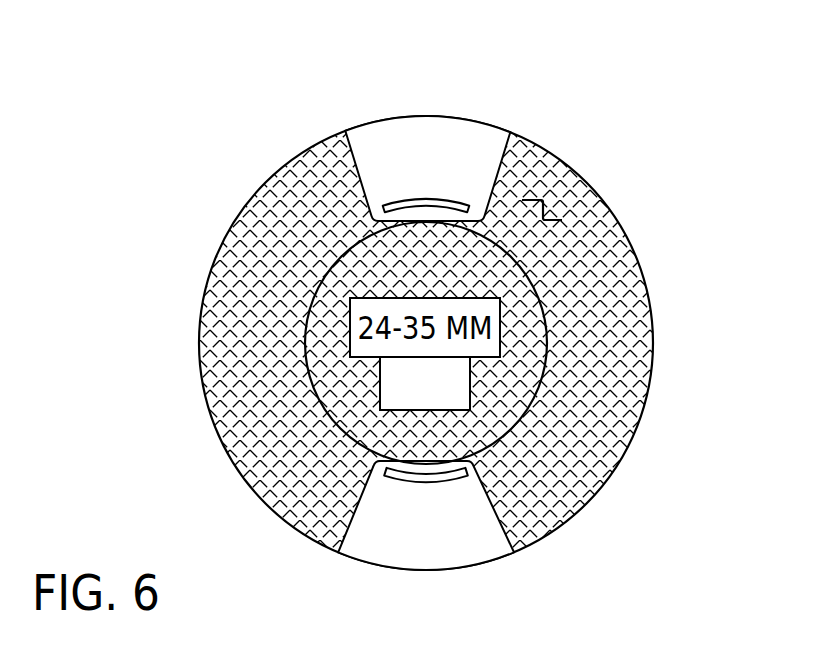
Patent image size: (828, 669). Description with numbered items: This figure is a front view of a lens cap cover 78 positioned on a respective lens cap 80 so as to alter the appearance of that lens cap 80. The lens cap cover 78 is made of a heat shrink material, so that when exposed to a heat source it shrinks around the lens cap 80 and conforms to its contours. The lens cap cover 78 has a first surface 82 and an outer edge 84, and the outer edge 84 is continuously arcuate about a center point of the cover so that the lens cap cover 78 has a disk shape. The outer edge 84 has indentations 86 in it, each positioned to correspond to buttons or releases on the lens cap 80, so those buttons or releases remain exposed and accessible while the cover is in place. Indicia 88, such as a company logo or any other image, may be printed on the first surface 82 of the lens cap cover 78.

The lens cap cover 78 is at (277, 200).
The lens cap 80 is at (440, 128).
The first surface 82 is at (550, 213).
The outer edge 84 is at (639, 268).
The indentations 86 is at (353, 163).
The indicia 88 is at (458, 404).